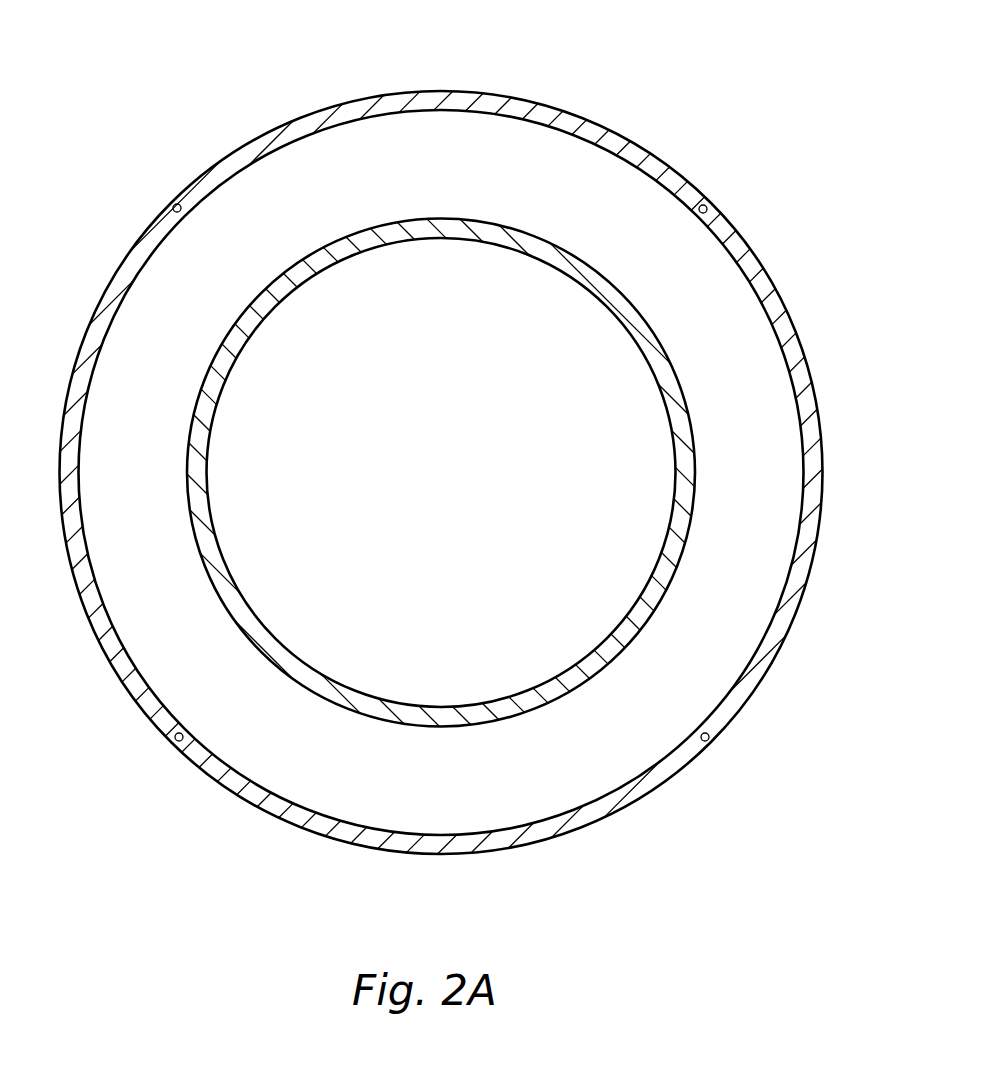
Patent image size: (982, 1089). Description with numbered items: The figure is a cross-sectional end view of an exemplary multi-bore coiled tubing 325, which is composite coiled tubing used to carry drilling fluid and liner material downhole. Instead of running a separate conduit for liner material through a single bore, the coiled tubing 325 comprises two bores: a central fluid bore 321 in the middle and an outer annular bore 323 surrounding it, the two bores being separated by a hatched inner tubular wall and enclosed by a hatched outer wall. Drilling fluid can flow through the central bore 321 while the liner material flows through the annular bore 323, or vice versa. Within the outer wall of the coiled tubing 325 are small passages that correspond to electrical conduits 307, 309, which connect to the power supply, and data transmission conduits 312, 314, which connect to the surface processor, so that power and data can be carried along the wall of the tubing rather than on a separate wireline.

The coiled tubing 325 is at (788, 284).
The outer annular bore 323 is at (440, 148).
The central fluid bore 321 is at (442, 663).
The data transmission conduit 312 is at (173, 204).
The electrical conduit 309 is at (708, 205).
The electrical conduit 307 is at (175, 741).
The data transmission conduit 314 is at (709, 741).